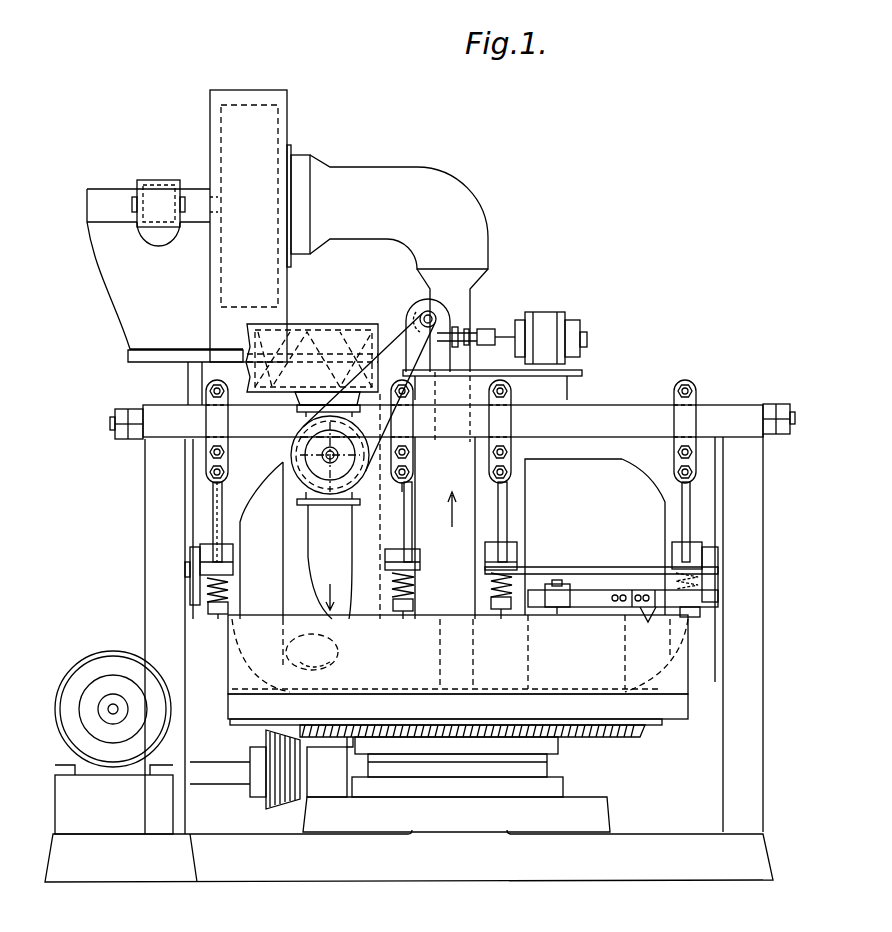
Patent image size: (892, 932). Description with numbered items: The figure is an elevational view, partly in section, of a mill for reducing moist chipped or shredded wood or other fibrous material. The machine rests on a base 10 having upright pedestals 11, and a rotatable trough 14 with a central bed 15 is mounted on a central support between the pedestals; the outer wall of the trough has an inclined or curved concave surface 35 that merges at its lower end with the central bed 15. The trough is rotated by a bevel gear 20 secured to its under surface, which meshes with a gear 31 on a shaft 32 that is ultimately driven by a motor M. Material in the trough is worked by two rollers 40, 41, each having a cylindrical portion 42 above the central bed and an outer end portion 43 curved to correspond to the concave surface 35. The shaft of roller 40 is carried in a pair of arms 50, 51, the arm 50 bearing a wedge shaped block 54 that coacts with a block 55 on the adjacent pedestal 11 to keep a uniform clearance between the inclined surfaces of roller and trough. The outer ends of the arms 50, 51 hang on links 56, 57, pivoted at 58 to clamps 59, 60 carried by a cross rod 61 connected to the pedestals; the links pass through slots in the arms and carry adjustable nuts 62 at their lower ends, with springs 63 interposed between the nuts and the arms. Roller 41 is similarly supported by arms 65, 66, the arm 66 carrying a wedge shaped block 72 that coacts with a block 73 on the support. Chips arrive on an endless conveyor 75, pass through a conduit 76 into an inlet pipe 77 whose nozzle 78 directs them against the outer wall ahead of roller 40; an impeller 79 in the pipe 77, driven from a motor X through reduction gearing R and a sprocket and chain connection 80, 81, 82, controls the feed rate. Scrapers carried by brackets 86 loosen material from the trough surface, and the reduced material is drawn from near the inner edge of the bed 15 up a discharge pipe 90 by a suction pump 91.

The base 10 is at (662, 830).
The upright portions or pedestals 11 is at (150, 492).
The trough 14 is at (680, 698).
The central bed or portion 15 is at (490, 685).
The bevel gear 20 is at (606, 735).
The gear 31 is at (266, 803).
The shaft 32 is at (214, 760).
The inclined or curved concave surface 35 is at (232, 633).
The roller 40 is at (408, 520).
The roller 41 is at (524, 491).
The cylindrical portion 42 is at (598, 452).
The outer end portion 43 is at (276, 472).
The arm 50 is at (230, 545).
The arm 51 is at (415, 545).
The wedge shaped or inclined block 54 is at (210, 540).
The block 55 is at (193, 560).
The link 56 is at (205, 489).
The link 57 is at (410, 492).
The pivot 58 is at (210, 467).
The clamp 59 is at (205, 405).
The clamp 60 is at (415, 449).
The cross rod 61 is at (625, 398).
The adjustable nut 62 is at (206, 607).
The spring 63 is at (210, 590).
The arm 65 is at (512, 540).
The arm 66 is at (672, 540).
The wedge shaped block 72 is at (708, 530).
The block 73 is at (715, 552).
The endless conveyor 75 is at (333, 322).
The conduit 76 is at (353, 322).
The inlet pipe 77 is at (318, 540).
The discharge end or nozzle 78 is at (330, 665).
The impeller 79 is at (298, 432).
The sprocket and chain connection 80 is at (440, 315).
The sprocket and chain connection 81 is at (398, 330).
The sprocket and chain connection 82 is at (295, 486).
The bracket 86 is at (588, 588).
The discharge pipe 90 is at (458, 548).
The suction pump 91 is at (287, 120).
The motor M is at (95, 665).
The reduction gearing R is at (418, 300).
The motor X is at (543, 317).